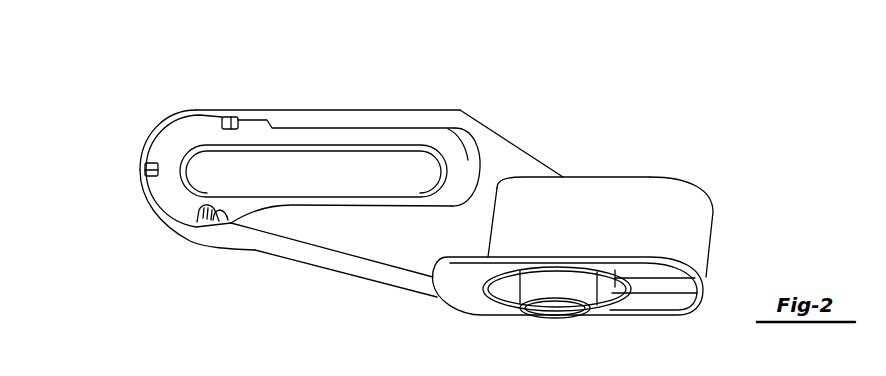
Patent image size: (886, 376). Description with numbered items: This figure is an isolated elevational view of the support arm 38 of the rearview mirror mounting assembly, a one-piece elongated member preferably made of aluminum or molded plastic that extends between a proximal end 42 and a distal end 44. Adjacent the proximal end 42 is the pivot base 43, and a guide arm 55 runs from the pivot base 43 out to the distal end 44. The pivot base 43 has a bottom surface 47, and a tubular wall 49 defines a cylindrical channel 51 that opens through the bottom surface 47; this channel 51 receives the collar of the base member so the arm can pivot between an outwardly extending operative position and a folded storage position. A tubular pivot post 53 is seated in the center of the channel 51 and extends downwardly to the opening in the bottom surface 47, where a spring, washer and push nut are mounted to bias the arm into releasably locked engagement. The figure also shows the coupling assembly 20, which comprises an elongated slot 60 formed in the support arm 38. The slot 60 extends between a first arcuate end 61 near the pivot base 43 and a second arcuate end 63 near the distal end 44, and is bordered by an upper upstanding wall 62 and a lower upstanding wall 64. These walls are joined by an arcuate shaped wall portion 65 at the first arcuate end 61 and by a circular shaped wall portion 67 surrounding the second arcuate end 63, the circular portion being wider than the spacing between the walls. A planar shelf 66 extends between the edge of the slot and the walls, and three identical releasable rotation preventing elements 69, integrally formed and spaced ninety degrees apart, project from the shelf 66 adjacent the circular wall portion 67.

The coupling assembly 20 is at (221, 96).
The support arm 38 is at (510, 132).
The proximal end 42 is at (702, 206).
The pivot base 43 is at (596, 177).
The distal end 44 is at (145, 147).
The bottom surface 47 is at (490, 298).
The tubular wall 49 is at (630, 306).
The cylindrical channel 51 is at (611, 283).
The tubular pivot post 53 is at (520, 309).
The guide arm 55 is at (410, 282).
The elongated slot 60 is at (287, 190).
The first arcuate end 61 is at (440, 186).
The upper upstanding wall 62 is at (333, 127).
The second arcuate end 63 is at (198, 204).
The lower upstanding wall 64 is at (357, 208).
The arcuate shaped wall portion 65 is at (460, 128).
The planar shelf 66 is at (410, 140).
The circular shaped wall portion 67 is at (163, 200).
The releasable rotation preventing elements 69 is at (218, 118).